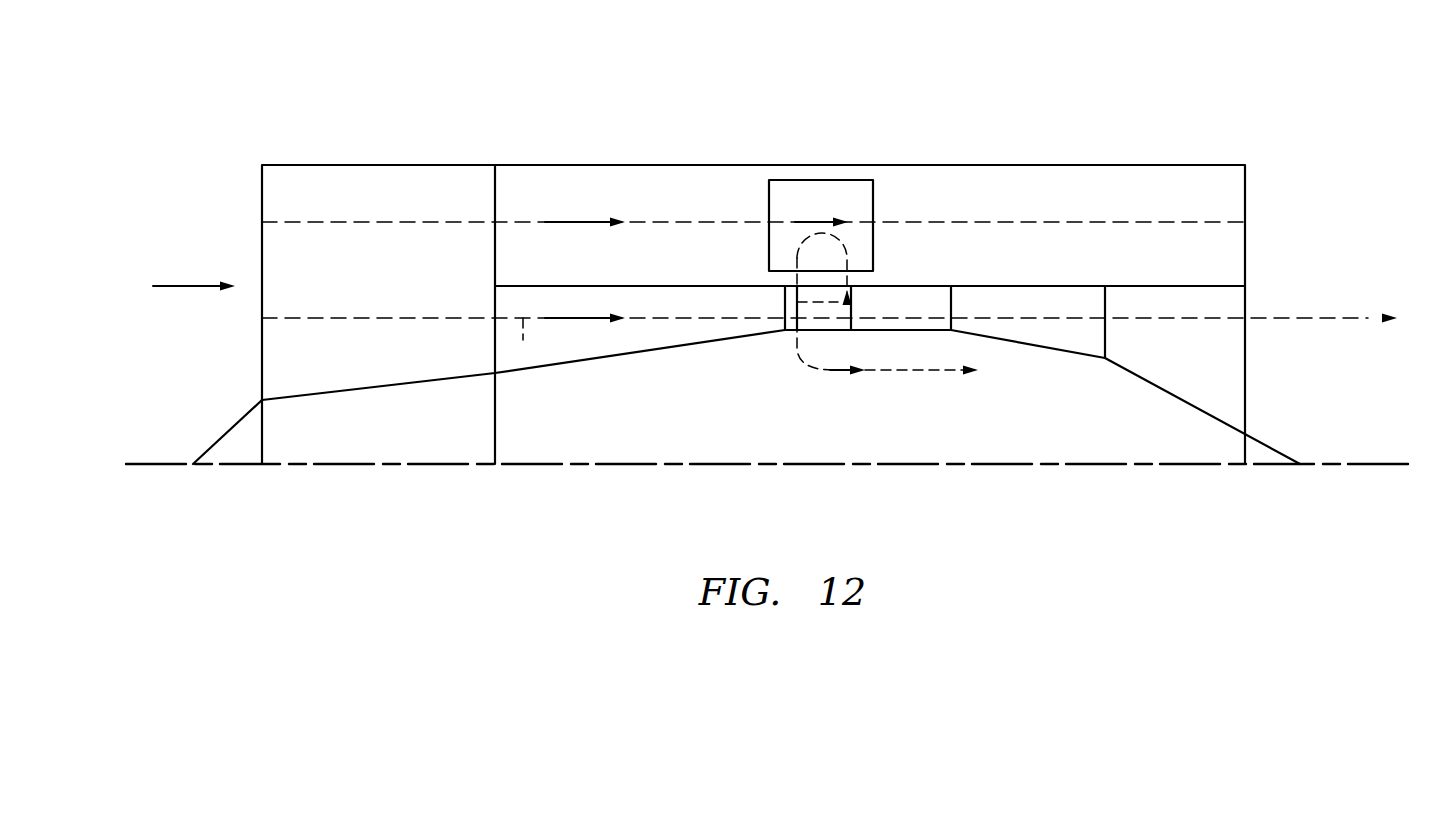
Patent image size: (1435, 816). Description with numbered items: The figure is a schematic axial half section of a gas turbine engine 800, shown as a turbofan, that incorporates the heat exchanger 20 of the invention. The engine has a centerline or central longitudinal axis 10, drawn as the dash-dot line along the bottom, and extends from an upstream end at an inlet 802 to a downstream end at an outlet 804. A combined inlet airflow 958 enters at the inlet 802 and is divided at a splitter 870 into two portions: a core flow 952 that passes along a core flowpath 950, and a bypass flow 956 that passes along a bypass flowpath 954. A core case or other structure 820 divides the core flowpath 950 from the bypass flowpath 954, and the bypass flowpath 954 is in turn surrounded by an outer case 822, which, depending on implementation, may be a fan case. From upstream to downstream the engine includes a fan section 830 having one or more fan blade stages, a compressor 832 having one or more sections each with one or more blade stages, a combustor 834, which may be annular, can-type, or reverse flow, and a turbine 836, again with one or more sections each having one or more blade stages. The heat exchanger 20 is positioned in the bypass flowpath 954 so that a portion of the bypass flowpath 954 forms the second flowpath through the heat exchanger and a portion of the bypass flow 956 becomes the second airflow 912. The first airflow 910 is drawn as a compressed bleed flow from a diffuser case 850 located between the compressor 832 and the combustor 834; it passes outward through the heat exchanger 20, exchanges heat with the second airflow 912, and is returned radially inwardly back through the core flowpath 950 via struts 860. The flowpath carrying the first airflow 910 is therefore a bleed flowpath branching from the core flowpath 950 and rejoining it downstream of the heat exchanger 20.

The gas turbine engine 800 is at (1052, 90).
The central longitudinal axis 10 is at (1385, 464).
The gas turbine engine heat exchanger 20 is at (856, 197).
The inlet 802 is at (222, 372).
The outlet 804 is at (1308, 278).
The core case 820 is at (1072, 286).
The outer case 822 is at (528, 165).
The fan section 830 is at (407, 205).
The compressor 832 is at (666, 333).
The combustor 834 is at (908, 335).
The turbine 836 is at (1066, 338).
The diffuser case 850 is at (848, 306).
The struts 860 is at (785, 305).
The splitter 870 is at (490, 286).
The first airflow 910 is at (828, 372).
The second airflow 912 is at (812, 222).
The core flowpath 950 is at (523, 330).
The core flow 952 is at (580, 318).
The bypass flowpath 954 is at (657, 222).
The bypass flow 956 is at (573, 222).
The combined inlet airflow 958 is at (175, 286).